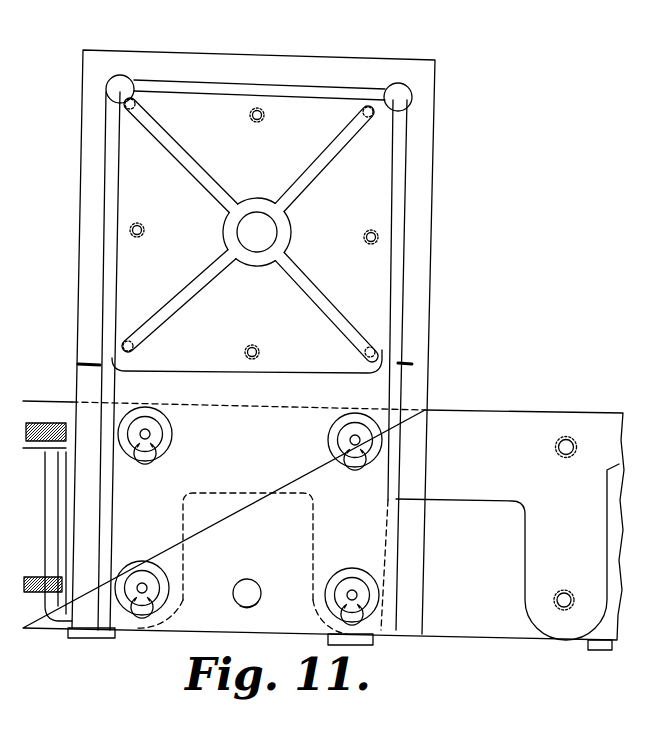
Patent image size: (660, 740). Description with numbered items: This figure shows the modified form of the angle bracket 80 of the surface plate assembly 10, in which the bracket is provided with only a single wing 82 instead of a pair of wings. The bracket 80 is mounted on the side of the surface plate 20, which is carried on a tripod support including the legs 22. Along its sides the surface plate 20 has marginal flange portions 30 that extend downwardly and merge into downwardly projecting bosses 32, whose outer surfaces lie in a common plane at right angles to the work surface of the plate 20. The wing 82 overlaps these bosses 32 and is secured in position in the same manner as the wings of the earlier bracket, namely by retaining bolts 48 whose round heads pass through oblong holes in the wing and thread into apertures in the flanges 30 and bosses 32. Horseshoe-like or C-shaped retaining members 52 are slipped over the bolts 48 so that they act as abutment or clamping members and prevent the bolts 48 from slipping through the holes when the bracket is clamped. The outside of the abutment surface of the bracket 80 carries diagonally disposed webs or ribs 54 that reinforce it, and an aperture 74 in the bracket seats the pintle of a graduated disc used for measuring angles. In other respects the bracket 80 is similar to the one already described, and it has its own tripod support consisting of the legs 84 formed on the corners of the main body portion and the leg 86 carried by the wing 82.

The apparatus 10 is at (13, 399).
The surface plate 20 is at (612, 432).
The legs 22 is at (101, 636).
The marginal flange portions 30 is at (478, 511).
The bosses 32 is at (564, 640).
The retaining bolts 48 is at (150, 434).
The retaining members 52 is at (160, 450).
The diagonally disposed webs or ribs 54 is at (192, 161).
The aperture 74 is at (268, 230).
The angle bracket 80 is at (262, 93).
The wing 82 is at (421, 570).
The legs 84 is at (118, 88).
The leg 86 is at (250, 590).